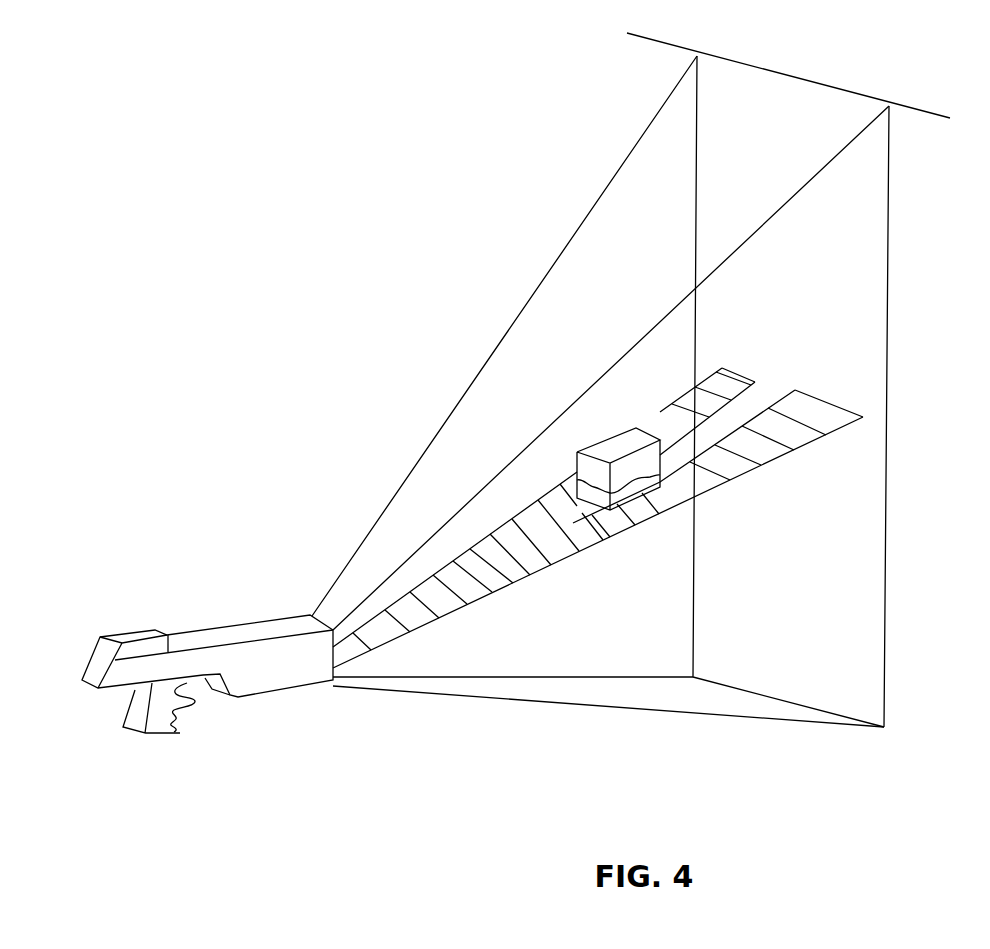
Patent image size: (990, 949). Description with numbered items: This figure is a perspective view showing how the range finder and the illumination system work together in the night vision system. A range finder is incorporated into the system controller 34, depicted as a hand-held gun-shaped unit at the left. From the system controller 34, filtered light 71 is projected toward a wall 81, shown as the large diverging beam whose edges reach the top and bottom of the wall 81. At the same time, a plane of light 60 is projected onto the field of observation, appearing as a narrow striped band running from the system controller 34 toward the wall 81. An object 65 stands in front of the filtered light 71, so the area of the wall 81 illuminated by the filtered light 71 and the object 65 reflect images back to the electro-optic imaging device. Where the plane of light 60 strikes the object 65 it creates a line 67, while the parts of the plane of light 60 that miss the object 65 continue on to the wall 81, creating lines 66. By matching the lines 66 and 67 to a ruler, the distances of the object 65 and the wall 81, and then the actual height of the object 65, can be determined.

The system controller 34 is at (214, 627).
The plane of light 60 is at (575, 523).
The object 65 is at (623, 440).
The lines 66 is at (828, 405).
The line 67 is at (590, 487).
The filtered light 71 is at (503, 332).
The wall 81 is at (888, 275).